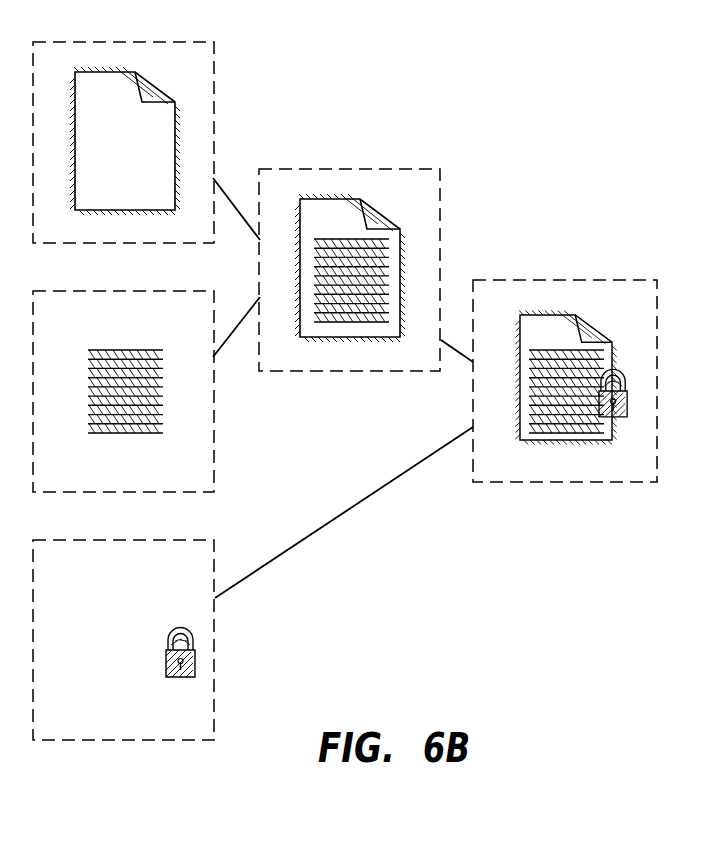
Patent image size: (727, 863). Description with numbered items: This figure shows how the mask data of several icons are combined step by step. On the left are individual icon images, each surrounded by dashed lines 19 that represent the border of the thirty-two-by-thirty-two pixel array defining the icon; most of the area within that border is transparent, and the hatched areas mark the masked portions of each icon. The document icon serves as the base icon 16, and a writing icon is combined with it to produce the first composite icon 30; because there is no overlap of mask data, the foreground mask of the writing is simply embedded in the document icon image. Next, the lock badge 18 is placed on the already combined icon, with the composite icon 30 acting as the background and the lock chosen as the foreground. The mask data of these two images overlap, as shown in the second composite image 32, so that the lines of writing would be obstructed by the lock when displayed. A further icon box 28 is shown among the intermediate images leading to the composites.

The base icon 16 is at (226, 71).
The badge 18 is at (204, 531).
The dashed lines 19 is at (103, 41).
The second processing node 28 is at (199, 277).
The first composite icon 30 is at (429, 146).
The second composite image 32 is at (639, 264).